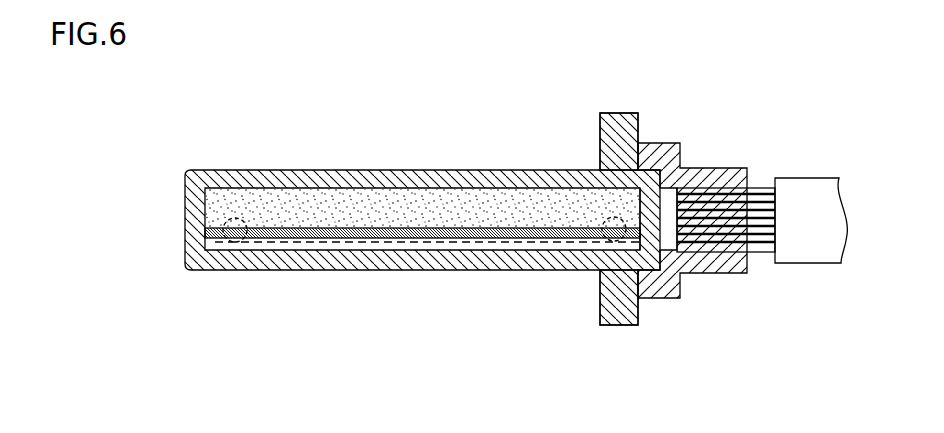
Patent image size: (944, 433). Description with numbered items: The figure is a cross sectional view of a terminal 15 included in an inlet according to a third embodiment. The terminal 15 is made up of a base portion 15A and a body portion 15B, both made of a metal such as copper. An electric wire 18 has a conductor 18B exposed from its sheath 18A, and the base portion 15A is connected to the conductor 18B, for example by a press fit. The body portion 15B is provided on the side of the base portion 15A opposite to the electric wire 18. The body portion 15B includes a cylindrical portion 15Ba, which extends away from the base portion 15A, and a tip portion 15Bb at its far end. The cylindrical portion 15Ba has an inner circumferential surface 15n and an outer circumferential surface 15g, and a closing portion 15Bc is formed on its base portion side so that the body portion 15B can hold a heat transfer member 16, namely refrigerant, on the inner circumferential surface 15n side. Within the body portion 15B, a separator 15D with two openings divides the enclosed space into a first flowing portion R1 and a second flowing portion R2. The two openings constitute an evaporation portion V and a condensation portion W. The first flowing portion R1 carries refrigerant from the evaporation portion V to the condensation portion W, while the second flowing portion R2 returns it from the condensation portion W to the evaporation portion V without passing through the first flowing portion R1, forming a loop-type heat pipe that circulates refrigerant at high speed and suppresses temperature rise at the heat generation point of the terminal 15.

The terminal 15 is at (417, 241).
The base portion 15A is at (691, 256).
The body portion 15B is at (385, 224).
The cylindrical portion 15Ba is at (418, 257).
The tip portion 15Bb is at (197, 222).
The closing portion 15Bc is at (650, 220).
The separator 15D is at (447, 230).
The outer circumferential surface 15g is at (315, 272).
The inner circumferential surface 15n is at (277, 246).
The heat transfer member 16 is at (307, 210).
The electric wire 18 is at (762, 275).
The sheath 18A is at (802, 220).
The conductor 18B is at (730, 220).
The first flowing portion R1 is at (378, 210).
The second flowing portion R2 is at (516, 243).
The evaporation portion V is at (250, 238).
The condensation portion W is at (578, 232).